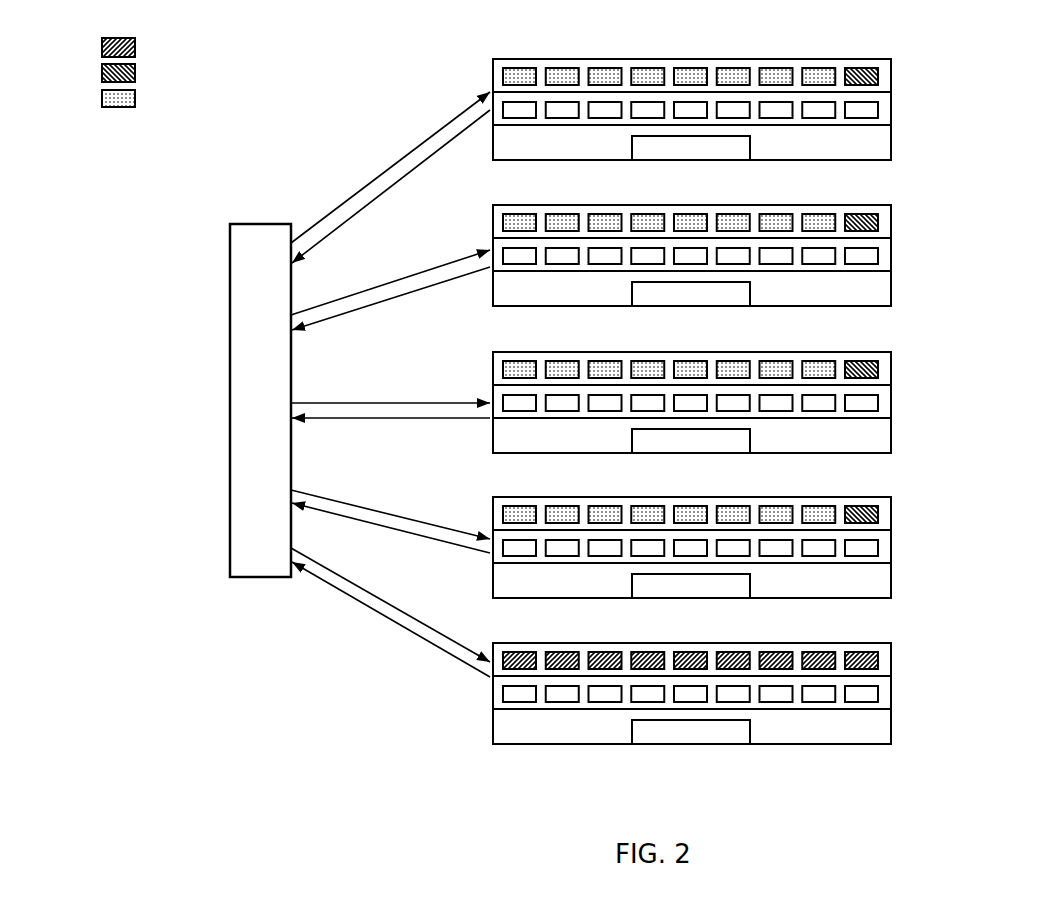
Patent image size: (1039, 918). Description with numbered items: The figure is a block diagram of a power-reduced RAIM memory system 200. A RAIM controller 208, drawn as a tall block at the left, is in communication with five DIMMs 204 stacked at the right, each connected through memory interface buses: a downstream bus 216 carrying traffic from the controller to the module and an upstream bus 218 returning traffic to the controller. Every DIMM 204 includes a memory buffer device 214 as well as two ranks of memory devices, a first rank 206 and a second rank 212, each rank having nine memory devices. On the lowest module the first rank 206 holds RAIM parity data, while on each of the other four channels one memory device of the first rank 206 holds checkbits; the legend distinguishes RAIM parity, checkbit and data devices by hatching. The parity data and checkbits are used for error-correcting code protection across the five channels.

The memory system 200 is at (562, 399).
The DIMM 204 is at (692, 415).
The first rank 206 is at (696, 348).
The RAIM controller 208 is at (246, 531).
The second rank 212 is at (722, 394).
The memory buffer device 214 is at (717, 439).
The downstream memory interface bus 216 is at (390, 377).
The upstream memory interface bus 218 is at (391, 404).